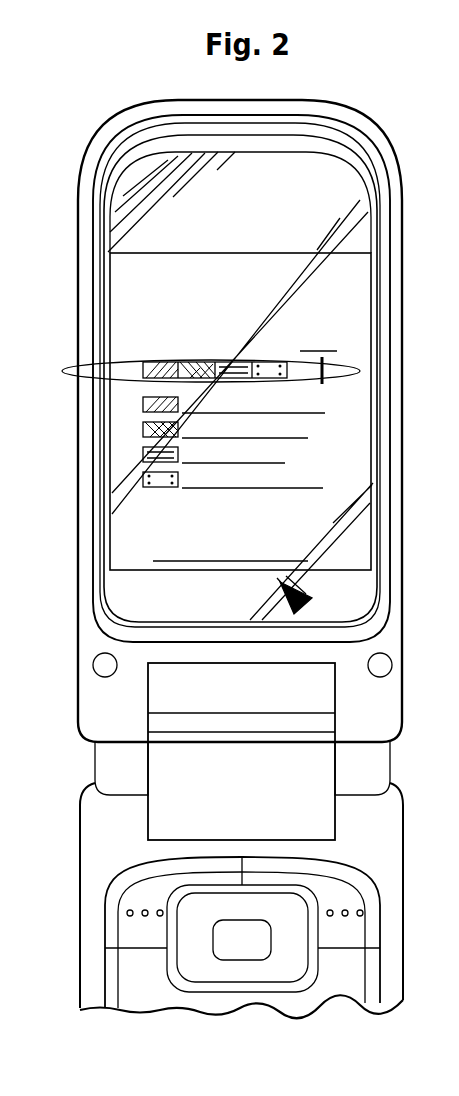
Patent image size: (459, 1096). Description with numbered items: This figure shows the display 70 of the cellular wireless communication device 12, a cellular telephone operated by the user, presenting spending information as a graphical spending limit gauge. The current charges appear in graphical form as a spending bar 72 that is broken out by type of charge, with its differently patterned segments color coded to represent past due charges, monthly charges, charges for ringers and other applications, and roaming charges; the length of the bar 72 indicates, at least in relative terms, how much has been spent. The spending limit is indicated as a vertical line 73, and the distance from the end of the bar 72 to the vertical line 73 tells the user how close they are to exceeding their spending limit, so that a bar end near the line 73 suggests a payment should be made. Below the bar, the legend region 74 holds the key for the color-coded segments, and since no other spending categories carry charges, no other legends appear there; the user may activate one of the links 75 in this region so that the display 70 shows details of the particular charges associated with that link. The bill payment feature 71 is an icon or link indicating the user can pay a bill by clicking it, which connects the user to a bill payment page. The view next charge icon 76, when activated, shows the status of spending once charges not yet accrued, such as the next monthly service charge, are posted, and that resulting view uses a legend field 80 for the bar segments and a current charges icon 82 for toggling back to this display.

The cellular wireless communication device 12 is at (403, 630).
The display 70 is at (110, 310).
The bill payment link 71 is at (325, 338).
The spending bar 72 is at (129, 382).
The spending limit line 73 is at (328, 366).
The legend region 74 is at (77, 455).
The links 75 is at (312, 425).
The view next charge icon 76 is at (171, 572).
The legend field 80 is at (456, 468).
The current charges icon 82 is at (458, 596).